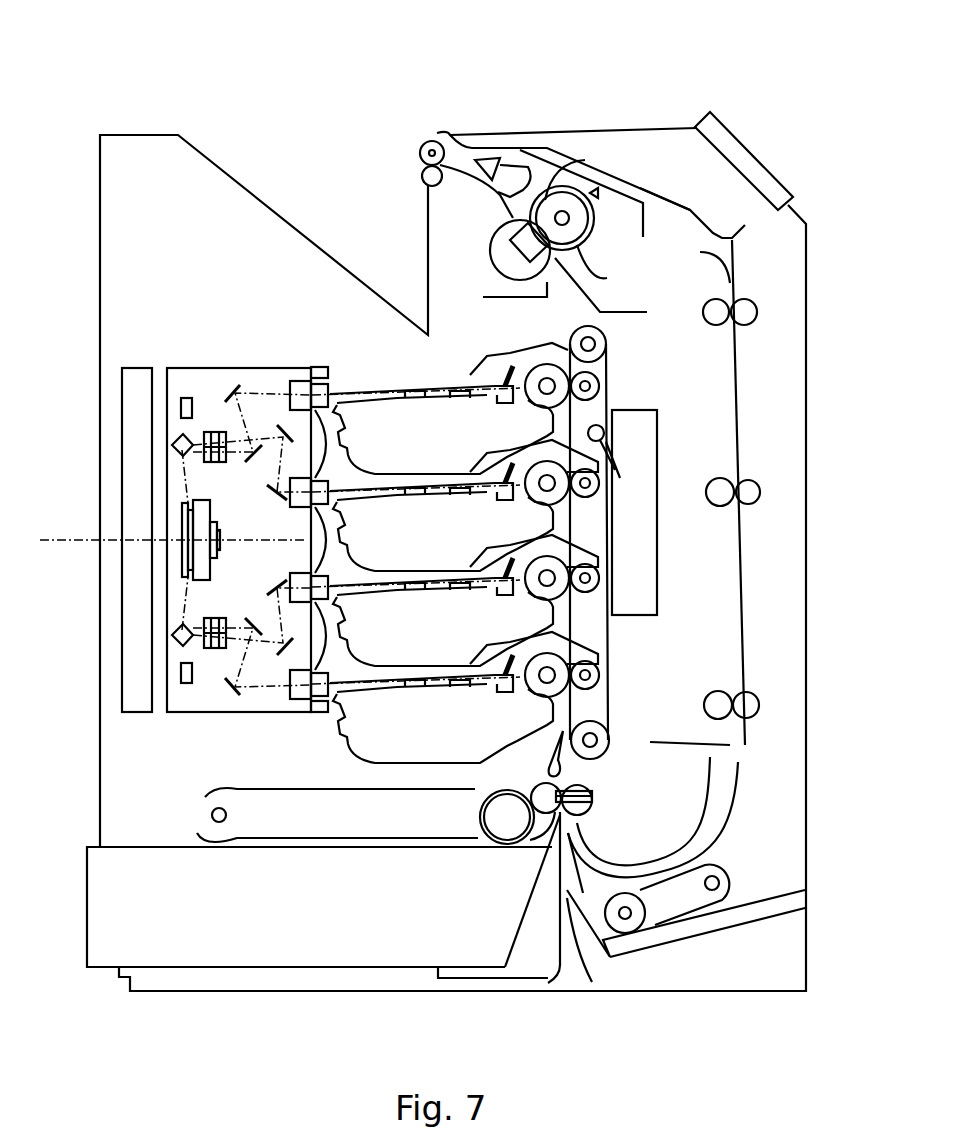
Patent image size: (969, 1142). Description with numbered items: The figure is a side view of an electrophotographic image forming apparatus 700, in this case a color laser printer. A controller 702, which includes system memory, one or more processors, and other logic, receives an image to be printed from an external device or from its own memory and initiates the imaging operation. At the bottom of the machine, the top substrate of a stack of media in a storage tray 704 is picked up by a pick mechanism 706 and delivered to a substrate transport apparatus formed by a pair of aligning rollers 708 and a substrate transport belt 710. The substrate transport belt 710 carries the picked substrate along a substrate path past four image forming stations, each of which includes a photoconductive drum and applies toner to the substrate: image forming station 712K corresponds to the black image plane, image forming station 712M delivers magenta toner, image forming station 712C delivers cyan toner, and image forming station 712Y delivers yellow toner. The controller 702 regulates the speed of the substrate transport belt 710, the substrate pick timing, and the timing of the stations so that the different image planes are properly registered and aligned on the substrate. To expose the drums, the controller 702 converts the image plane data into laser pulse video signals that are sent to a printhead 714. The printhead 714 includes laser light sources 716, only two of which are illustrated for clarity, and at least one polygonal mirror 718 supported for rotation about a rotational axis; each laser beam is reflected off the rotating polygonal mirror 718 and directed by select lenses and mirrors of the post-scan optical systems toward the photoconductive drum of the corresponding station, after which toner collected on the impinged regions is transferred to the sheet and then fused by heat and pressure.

The electrophotographic image forming apparatus 700 is at (143, 29).
The controller 702 is at (137, 425).
The storage tray 704 is at (120, 895).
The pick mechanism 706 is at (495, 835).
The aligning rollers 708 is at (580, 790).
The substrate transport belt 710 is at (615, 650).
The image forming station 712K is at (618, 385).
The image forming station 712M is at (590, 505).
The image forming station 712C is at (592, 598).
The image forming station 712Y is at (605, 690).
The printhead 714 is at (275, 375).
The laser light sources 716 is at (186, 393).
The polygonal mirror 718 is at (185, 567).